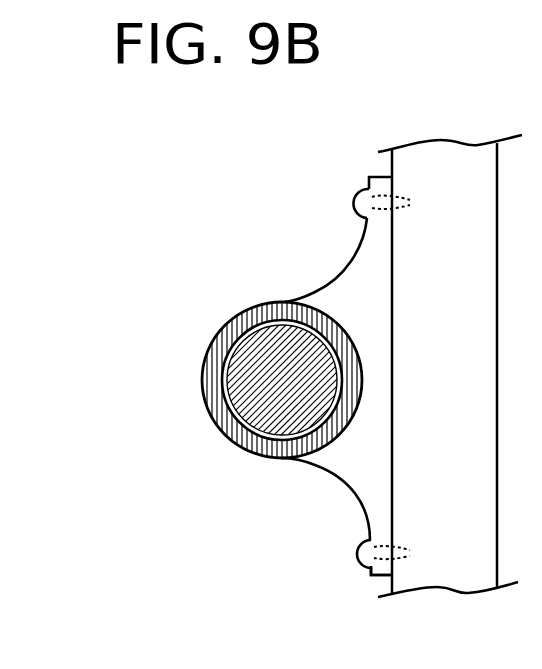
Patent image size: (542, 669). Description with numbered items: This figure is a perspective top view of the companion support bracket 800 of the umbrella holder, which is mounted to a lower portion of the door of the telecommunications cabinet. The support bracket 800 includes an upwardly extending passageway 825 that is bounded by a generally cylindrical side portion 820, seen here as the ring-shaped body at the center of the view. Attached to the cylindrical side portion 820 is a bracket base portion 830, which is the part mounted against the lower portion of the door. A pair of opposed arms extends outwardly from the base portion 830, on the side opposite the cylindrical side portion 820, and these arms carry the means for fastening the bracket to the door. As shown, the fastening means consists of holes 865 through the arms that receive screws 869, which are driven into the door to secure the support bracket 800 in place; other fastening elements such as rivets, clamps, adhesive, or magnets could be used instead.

The support bracket 800 is at (140, 522).
The cylindrical side portion 820 is at (215, 332).
The upwardly extending passageway 825 is at (275, 403).
The bracket base portion 830 is at (332, 282).
The screws 869 is at (357, 555).
The holes 865 is at (370, 575).